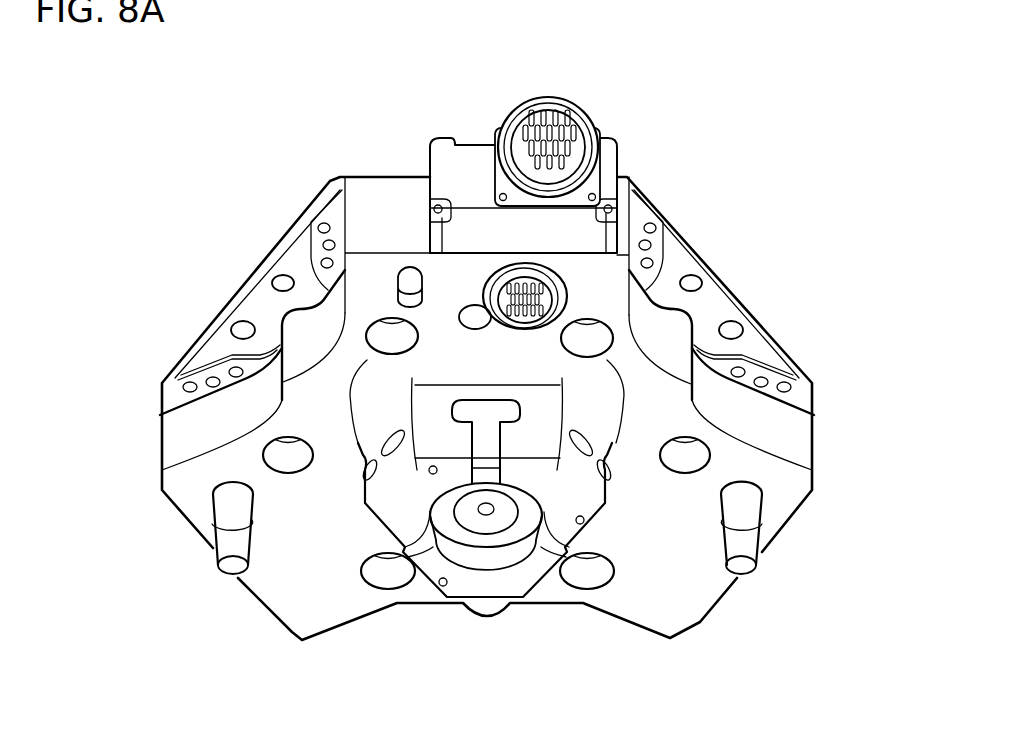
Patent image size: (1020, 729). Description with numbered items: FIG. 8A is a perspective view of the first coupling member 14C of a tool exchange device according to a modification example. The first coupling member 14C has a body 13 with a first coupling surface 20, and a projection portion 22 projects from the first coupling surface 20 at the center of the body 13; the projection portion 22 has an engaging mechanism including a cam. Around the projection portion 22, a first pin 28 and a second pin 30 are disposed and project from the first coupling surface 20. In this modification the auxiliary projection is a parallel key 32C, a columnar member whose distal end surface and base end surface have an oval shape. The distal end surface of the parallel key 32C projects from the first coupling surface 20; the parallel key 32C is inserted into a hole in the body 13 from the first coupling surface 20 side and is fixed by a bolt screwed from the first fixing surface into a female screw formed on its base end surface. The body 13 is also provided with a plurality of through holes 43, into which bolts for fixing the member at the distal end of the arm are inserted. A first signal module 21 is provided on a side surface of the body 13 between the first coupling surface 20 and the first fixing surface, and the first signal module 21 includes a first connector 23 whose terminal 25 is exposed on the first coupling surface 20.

The body 13 is at (795, 442).
The first coupling member 14C is at (758, 128).
The first coupling surface 20 is at (658, 515).
The first signal module 21 is at (468, 147).
The projection portion 22 is at (583, 517).
The first connector 23 is at (528, 283).
The terminal 25 is at (618, 334).
The first pin 28 is at (225, 507).
The second pin 30 is at (750, 505).
The parallel key 32C is at (403, 300).
The through holes 43 is at (284, 456).